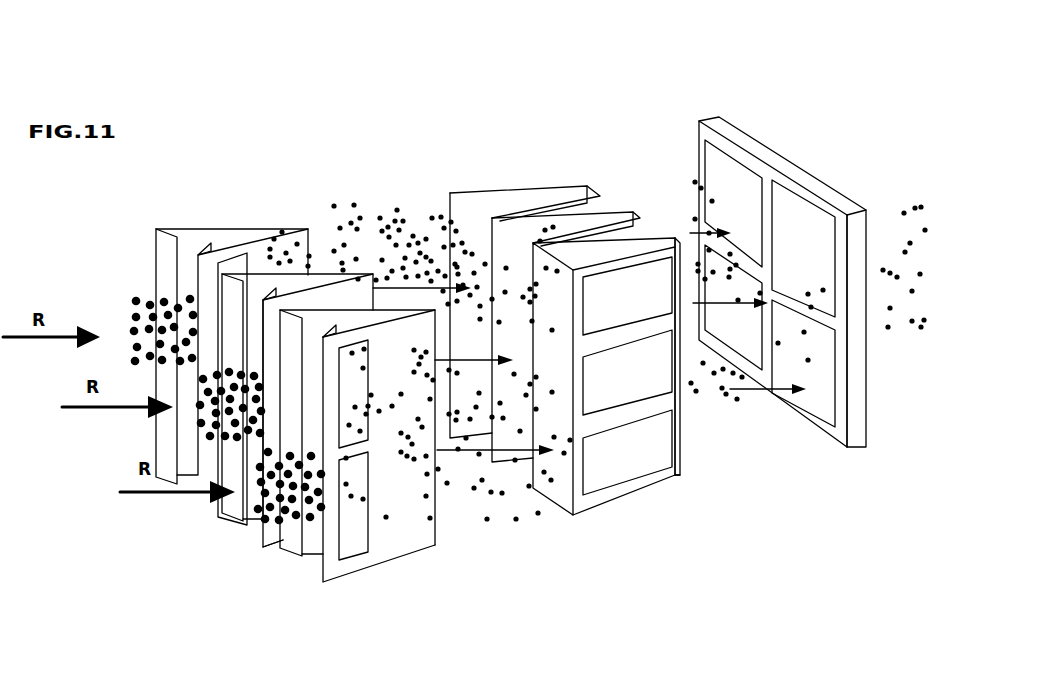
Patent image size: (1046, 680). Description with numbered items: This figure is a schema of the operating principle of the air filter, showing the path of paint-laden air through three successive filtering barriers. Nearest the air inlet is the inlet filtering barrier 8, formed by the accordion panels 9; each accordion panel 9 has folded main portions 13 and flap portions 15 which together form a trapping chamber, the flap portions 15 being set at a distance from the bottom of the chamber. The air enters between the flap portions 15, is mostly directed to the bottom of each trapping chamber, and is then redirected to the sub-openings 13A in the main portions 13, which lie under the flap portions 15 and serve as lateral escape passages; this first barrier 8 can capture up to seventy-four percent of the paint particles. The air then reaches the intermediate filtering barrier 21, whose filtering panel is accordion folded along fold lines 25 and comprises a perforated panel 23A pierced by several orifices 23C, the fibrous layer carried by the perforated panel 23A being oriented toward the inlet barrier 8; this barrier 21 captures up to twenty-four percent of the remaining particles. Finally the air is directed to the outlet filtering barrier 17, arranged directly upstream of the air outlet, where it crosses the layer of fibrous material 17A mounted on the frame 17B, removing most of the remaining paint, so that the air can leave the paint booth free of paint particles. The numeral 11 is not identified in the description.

The inlet filtering barrier 8 is at (258, 200).
The accordion panel 9 is at (214, 218).
The front slab 11 is at (283, 547).
The main portion 13 is at (412, 465).
The sub-opening 13A is at (352, 540).
The flap portion 15 is at (167, 250).
The outlet filtering barrier 17 is at (762, 110).
The layer of fibrous material 17A is at (815, 239).
The frame 17B is at (840, 425).
The intermediate filtering barrier 21 is at (482, 170).
The perforated panel 23A is at (582, 504).
The orifice 23C is at (641, 467).
The fold line 25 is at (682, 482).